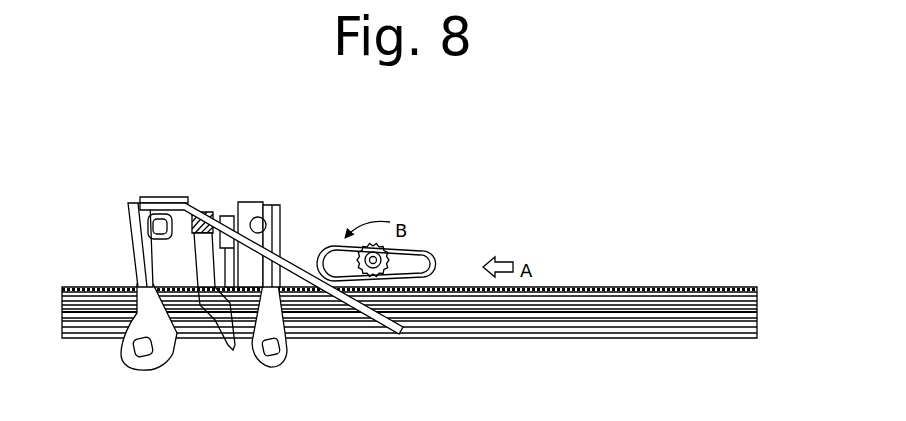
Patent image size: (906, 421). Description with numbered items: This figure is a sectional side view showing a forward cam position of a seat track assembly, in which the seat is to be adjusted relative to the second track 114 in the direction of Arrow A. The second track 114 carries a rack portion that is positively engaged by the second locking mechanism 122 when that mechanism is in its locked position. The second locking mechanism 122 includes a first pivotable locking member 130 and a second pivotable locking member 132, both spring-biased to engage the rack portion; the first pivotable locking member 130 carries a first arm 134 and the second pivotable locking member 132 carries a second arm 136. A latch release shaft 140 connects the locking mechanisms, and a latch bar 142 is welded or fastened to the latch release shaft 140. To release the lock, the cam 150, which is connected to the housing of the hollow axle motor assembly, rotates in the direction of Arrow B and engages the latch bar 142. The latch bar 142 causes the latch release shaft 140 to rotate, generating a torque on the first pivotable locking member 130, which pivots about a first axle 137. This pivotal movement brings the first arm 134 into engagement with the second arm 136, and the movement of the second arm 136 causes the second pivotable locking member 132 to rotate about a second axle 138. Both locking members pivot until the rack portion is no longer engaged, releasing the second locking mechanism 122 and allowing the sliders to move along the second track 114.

The second track 114 is at (762, 288).
The second locking mechanism 122 is at (206, 145).
The first pivotable locking member 130 is at (146, 189).
The second pivotable locking member 132 is at (269, 185).
The first arm 134 is at (215, 200).
The second arm 136 is at (233, 343).
The first axle 137 is at (132, 360).
The second axle 138 is at (282, 357).
The latch release shaft 140 is at (147, 232).
The latch bar 142 is at (306, 254).
The cam 150 is at (433, 260).